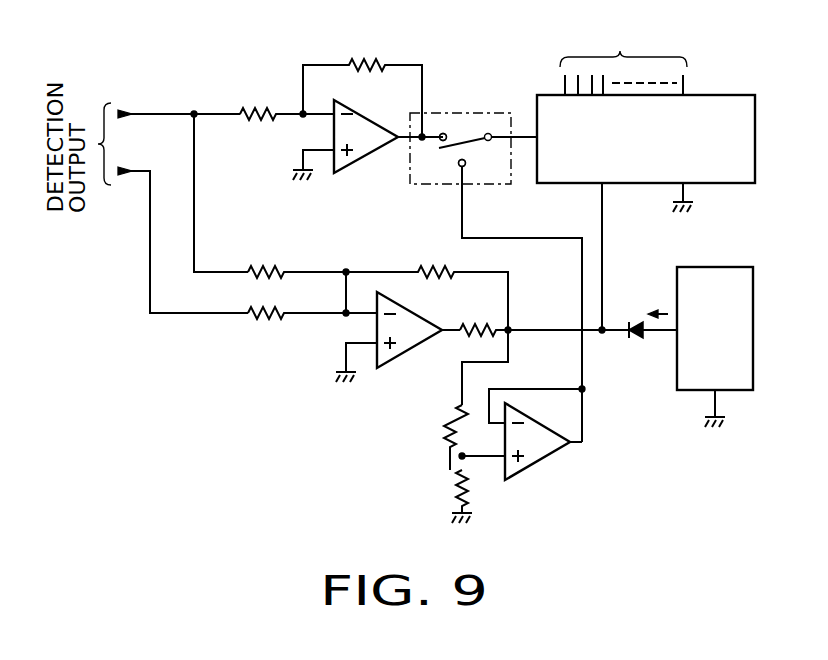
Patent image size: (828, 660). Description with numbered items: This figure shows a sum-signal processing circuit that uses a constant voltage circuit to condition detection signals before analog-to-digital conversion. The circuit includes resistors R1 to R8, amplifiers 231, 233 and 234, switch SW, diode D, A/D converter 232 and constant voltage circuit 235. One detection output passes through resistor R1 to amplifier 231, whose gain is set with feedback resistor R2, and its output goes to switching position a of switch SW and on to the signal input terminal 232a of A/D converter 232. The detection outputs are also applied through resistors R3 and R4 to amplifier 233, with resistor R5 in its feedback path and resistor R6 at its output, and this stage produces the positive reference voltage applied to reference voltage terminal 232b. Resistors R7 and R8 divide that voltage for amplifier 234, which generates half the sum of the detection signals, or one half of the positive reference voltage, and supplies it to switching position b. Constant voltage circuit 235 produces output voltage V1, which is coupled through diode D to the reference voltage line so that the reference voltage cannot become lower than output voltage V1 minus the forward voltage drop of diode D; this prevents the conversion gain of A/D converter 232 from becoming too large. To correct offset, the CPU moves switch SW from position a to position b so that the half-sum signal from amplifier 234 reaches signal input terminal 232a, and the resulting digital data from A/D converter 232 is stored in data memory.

The resistor R1 is at (258, 109).
The resistor R2 is at (368, 61).
The resistor R3 is at (263, 268).
The resistor R4 is at (266, 319).
The resistor R5 is at (436, 267).
The resistor R6 is at (468, 325).
The resistor R7 is at (455, 416).
The resistor R8 is at (455, 485).
The amplifier 231 is at (366, 156).
The A/D converter 232 is at (629, 186).
The signal input terminal 232a is at (536, 131).
The reference voltage terminal 232b is at (600, 186).
The amplifier 233 is at (416, 350).
The amplifier 234 is at (541, 456).
The constant voltage circuit 235 is at (720, 267).
The switch SW is at (465, 120).
The switching position a is at (443, 133).
The switching position b is at (466, 165).
The diode D is at (634, 340).
The output voltage V1 is at (657, 303).